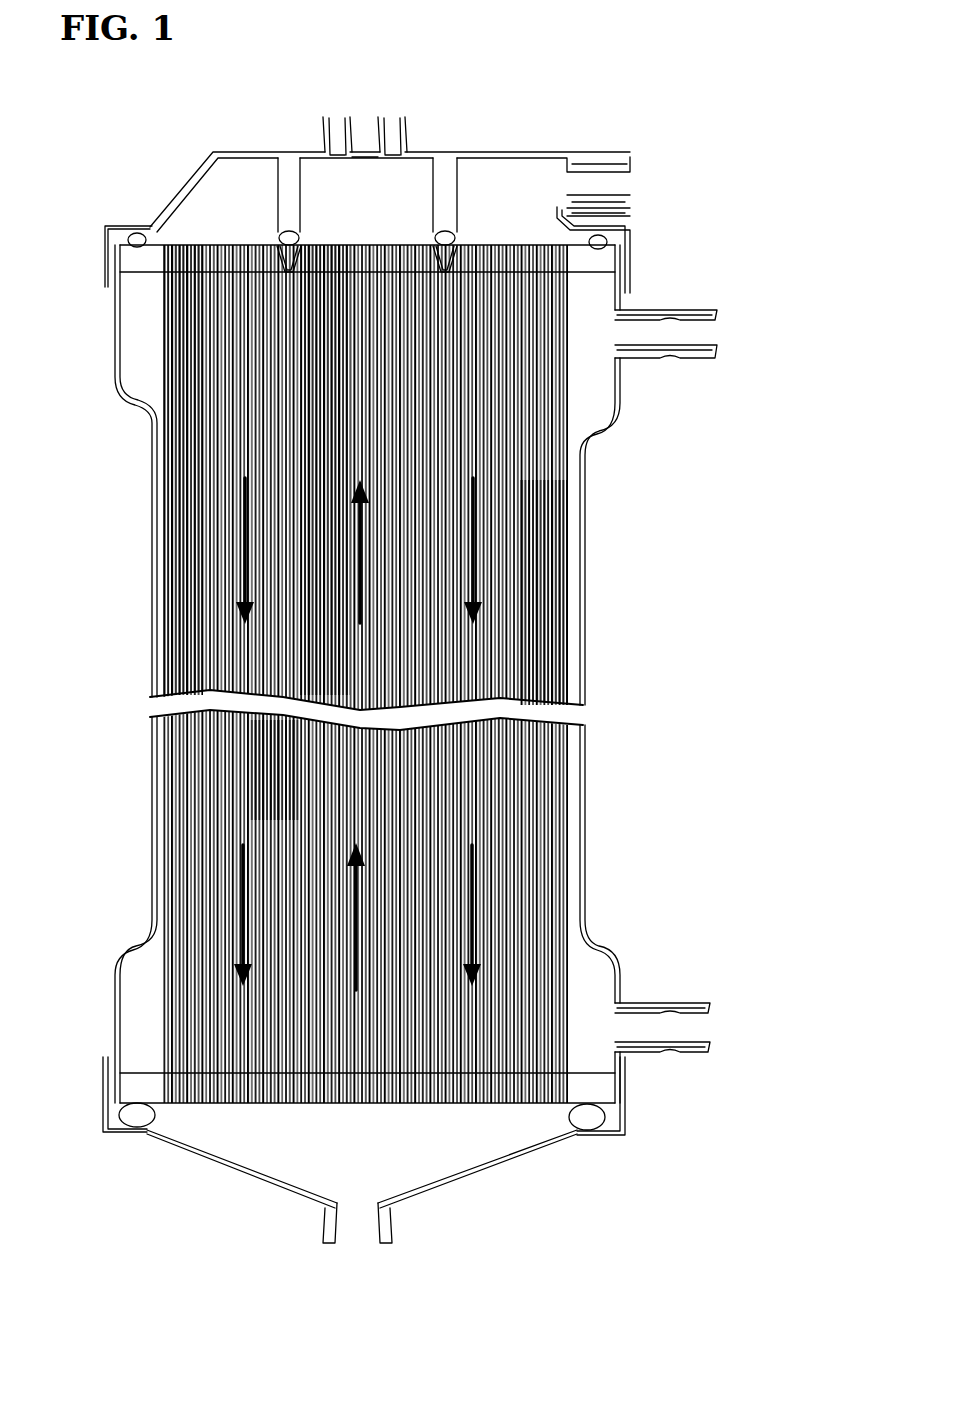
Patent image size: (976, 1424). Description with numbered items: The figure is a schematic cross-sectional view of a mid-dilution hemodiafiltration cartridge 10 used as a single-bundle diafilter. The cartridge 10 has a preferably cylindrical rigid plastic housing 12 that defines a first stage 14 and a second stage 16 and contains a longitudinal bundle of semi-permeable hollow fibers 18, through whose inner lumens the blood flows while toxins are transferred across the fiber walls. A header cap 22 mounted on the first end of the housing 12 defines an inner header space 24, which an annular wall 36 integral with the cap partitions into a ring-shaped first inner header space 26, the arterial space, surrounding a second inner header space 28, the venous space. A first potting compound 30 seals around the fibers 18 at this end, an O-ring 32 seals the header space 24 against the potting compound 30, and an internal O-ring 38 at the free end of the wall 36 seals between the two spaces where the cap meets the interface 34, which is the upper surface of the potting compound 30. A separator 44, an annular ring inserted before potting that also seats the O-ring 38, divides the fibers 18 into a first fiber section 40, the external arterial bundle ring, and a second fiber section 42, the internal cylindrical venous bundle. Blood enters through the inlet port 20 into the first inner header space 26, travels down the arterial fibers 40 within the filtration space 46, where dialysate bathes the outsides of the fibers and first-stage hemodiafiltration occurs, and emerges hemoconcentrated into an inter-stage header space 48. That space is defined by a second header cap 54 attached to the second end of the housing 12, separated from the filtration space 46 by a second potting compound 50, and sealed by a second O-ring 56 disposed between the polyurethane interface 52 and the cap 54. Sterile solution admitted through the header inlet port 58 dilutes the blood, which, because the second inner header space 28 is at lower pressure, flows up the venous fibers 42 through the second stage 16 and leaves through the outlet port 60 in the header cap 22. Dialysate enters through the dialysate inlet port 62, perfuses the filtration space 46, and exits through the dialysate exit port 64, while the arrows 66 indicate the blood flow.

The mid-dilution hemodiafiltration cartridge 10 is at (568, 717).
The housing 12 is at (148, 662).
The first stage 14 is at (538, 450).
The second stage 16 is at (300, 893).
The semi-permeable hollow fibers 18 is at (535, 555).
The inlet port 20 is at (632, 185).
The header cap 22 is at (188, 188).
The inner header space 24 is at (535, 185).
The first inner header space 26 is at (237, 167).
The second inner header space 28 is at (322, 190).
The first potting compound 30 is at (600, 267).
The O-ring 32 is at (133, 232).
The interface 34 is at (192, 245).
The annular wall 36 is at (443, 192).
The internal O-ring 38 is at (298, 238).
The first fiber section 40 is at (190, 353).
The second fiber section 42 is at (342, 373).
The separator 44 is at (458, 247).
The filtration space 46 is at (280, 767).
The inter-stage header space 48 is at (452, 1140).
The second potting compound 50 is at (597, 1087).
The polyurethane interface 52 is at (337, 1103).
The second header cap 54 is at (250, 1177).
The second O-ring 56 is at (587, 1123).
The header inlet port 58 is at (357, 1238).
The outlet port 60 is at (363, 118).
The dialysate inlet port 62 is at (705, 1032).
The dialysate exit port 64 is at (708, 340).
The arrows 66 is at (357, 588).